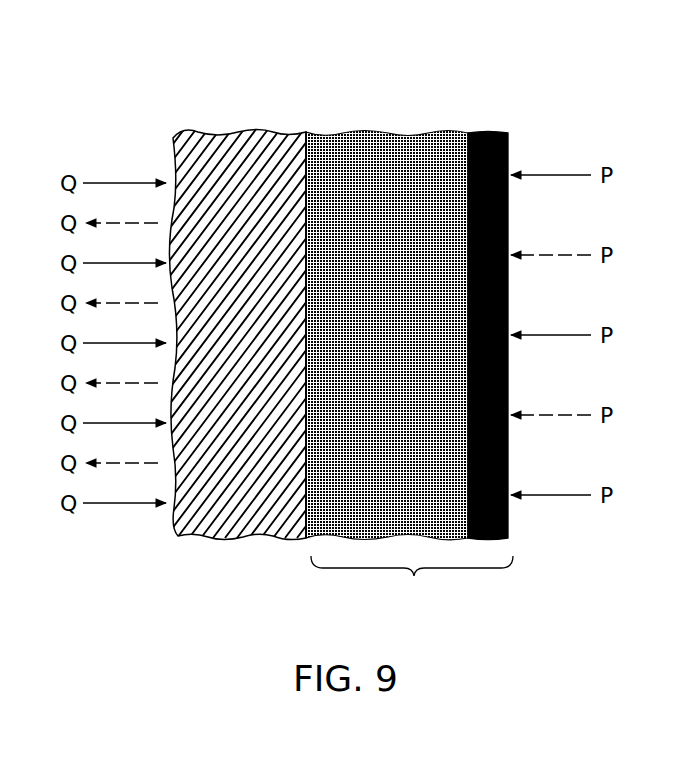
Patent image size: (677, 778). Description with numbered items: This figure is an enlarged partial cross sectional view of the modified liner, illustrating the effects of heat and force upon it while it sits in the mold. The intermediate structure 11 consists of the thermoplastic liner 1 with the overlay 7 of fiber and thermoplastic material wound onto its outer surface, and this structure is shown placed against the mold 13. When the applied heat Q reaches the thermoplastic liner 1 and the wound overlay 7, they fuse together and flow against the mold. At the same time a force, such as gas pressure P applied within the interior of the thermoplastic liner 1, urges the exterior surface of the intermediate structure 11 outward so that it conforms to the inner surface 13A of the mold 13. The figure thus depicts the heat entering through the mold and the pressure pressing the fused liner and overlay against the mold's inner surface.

The mold 13 is at (243, 125).
The inner surface of the mold 13A is at (298, 125).
The overlay 7 is at (381, 125).
The thermoplastic liner 1 is at (481, 125).
The intermediate structure 11 is at (412, 583).